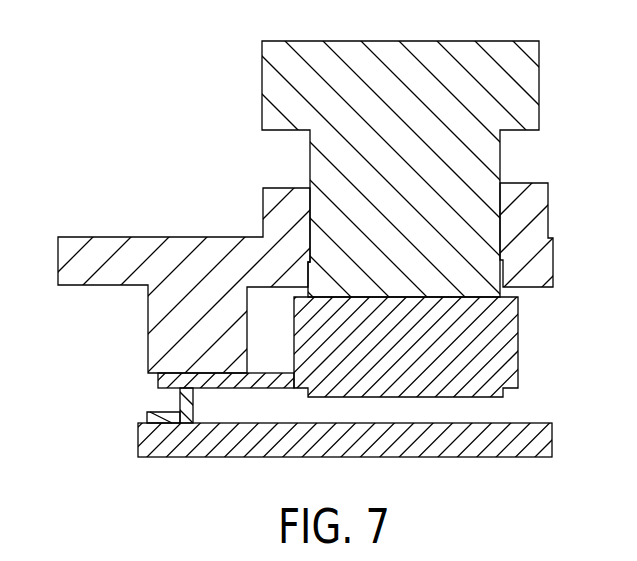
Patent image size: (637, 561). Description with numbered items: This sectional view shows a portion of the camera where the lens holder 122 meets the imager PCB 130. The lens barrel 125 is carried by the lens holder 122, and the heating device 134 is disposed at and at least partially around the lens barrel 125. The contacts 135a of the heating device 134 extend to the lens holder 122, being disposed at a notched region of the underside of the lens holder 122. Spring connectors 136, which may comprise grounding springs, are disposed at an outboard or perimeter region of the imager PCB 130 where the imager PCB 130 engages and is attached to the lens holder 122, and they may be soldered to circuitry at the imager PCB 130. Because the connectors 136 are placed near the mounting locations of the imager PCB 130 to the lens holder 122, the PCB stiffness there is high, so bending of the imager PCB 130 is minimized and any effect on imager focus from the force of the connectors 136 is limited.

The lens holder 122 is at (148, 253).
The lens barrel 125 is at (413, 157).
The imager PCB 130 is at (443, 435).
The heating device 134 is at (427, 352).
The contacts 135a is at (183, 377).
The spring connectors 136 is at (172, 415).